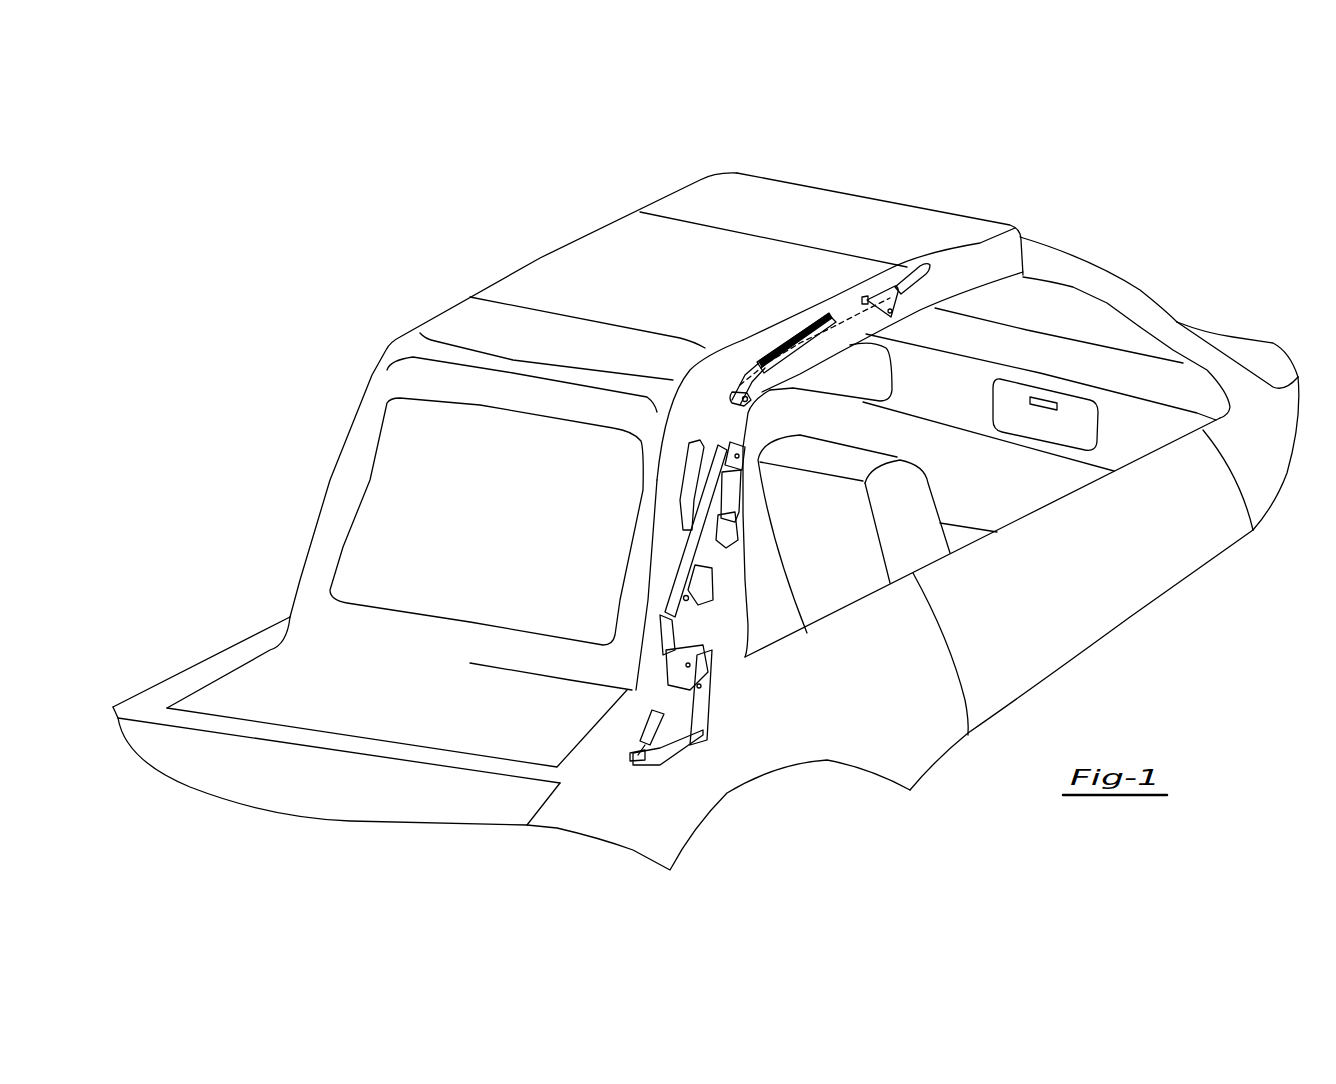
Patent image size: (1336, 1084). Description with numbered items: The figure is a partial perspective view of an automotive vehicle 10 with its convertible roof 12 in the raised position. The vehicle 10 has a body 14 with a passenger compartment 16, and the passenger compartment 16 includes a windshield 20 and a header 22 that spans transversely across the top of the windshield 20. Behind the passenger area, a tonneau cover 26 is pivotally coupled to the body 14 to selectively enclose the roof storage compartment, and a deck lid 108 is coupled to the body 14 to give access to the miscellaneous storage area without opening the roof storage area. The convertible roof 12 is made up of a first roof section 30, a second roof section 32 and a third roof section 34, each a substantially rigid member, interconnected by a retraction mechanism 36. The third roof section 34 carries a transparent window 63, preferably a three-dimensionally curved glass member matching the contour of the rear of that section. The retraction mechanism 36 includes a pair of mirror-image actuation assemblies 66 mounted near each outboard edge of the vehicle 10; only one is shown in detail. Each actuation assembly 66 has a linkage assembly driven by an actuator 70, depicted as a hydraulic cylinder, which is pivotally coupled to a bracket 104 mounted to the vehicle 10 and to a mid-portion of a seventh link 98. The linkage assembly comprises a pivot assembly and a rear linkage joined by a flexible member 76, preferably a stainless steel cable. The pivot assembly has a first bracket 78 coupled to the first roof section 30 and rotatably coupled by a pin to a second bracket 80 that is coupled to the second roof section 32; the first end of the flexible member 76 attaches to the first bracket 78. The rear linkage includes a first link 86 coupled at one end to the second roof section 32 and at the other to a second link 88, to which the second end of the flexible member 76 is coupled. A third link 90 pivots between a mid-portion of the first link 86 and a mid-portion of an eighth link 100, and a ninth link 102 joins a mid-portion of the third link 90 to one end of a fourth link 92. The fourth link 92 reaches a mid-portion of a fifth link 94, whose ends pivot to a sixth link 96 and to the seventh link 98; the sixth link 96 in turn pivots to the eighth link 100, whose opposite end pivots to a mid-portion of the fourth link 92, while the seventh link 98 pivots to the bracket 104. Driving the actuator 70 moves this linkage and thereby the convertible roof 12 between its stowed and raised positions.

The automotive vehicle 10 is at (1199, 283).
The convertible roof 12 is at (552, 214).
The body 14 is at (925, 750).
The passenger compartment 16 is at (984, 487).
The windshield 20 is at (1107, 320).
The header 22 is at (1045, 242).
The tonneau cover 26 is at (263, 672).
The first roof section 30 is at (690, 193).
The second roof section 32 is at (518, 283).
The third roof section 34 is at (368, 405).
The retraction mechanism 36 is at (665, 545).
The transparent window 63 is at (432, 491).
The actuation assembly 66 is at (702, 609).
The actuator 70 is at (655, 725).
The flexible member 76 is at (850, 307).
The first bracket 78 is at (935, 275).
The second bracket 80 is at (897, 315).
The first link 86 is at (780, 343).
The second link 88 is at (680, 455).
The third link 90 is at (731, 397).
The fourth link 92 is at (703, 590).
The fifth link 94 is at (672, 598).
The sixth link 96 is at (718, 515).
The seventh link 98 is at (698, 660).
The eighth link 100 is at (745, 490).
The ninth link 102 is at (742, 432).
The bracket 104 is at (715, 715).
The deck lid 108 is at (365, 803).